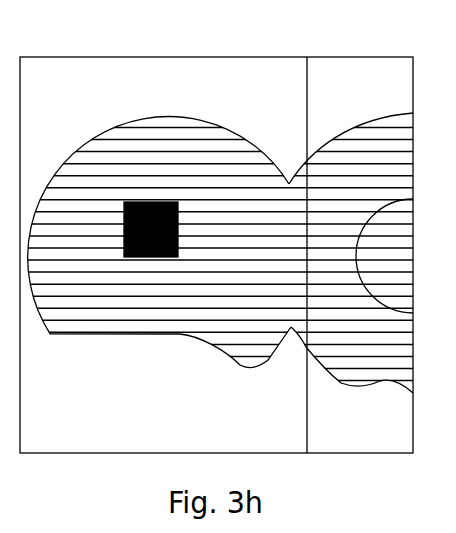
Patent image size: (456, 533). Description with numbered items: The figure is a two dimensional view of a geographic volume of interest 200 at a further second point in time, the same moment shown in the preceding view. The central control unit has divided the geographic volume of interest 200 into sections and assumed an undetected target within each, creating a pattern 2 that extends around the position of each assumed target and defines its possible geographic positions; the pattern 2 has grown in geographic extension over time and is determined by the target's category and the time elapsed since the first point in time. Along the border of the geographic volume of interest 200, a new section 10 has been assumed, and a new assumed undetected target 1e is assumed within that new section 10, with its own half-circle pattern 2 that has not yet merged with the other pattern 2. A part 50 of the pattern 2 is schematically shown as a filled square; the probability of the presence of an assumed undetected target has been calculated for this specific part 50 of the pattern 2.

The geographic volume of interest 200 is at (256, 43).
The pattern 2 is at (118, 122).
The new section 10 is at (380, 92).
The part of the pattern 50 is at (147, 258).
The new assumed undetected target 1e is at (411, 253).